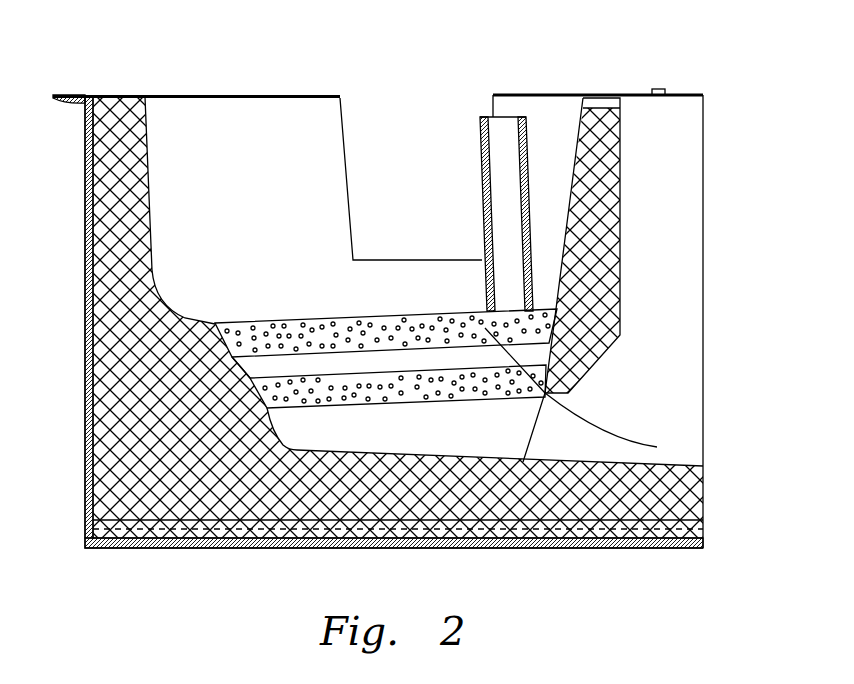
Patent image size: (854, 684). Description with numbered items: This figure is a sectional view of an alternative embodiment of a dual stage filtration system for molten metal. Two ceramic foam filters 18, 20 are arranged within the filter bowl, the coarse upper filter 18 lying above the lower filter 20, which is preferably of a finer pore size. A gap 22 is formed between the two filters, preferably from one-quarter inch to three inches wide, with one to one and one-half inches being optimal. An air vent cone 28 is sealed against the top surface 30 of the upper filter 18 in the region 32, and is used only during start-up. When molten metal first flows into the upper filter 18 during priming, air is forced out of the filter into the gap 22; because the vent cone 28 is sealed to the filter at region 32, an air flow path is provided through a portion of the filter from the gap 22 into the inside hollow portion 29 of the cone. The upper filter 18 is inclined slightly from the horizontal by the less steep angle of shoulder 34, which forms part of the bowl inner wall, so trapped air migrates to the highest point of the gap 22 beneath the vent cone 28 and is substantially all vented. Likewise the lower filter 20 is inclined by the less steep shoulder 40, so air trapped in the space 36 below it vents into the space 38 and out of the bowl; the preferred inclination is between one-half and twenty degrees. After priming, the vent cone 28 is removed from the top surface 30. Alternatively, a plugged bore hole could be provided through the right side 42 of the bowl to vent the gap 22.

The ceramic foam filter 18 is at (240, 323).
The ceramic foam filter 20 is at (480, 378).
The gap 22 is at (422, 358).
The air vent cone 28 is at (528, 152).
The inside hollow portion 29 is at (512, 220).
The top surface 30 is at (280, 322).
The region 32 is at (657, 447).
The shoulder 34 is at (222, 352).
The space 36 is at (313, 428).
The space 38 is at (623, 378).
The shoulder 40 is at (258, 378).
The right side 42 is at (600, 282).